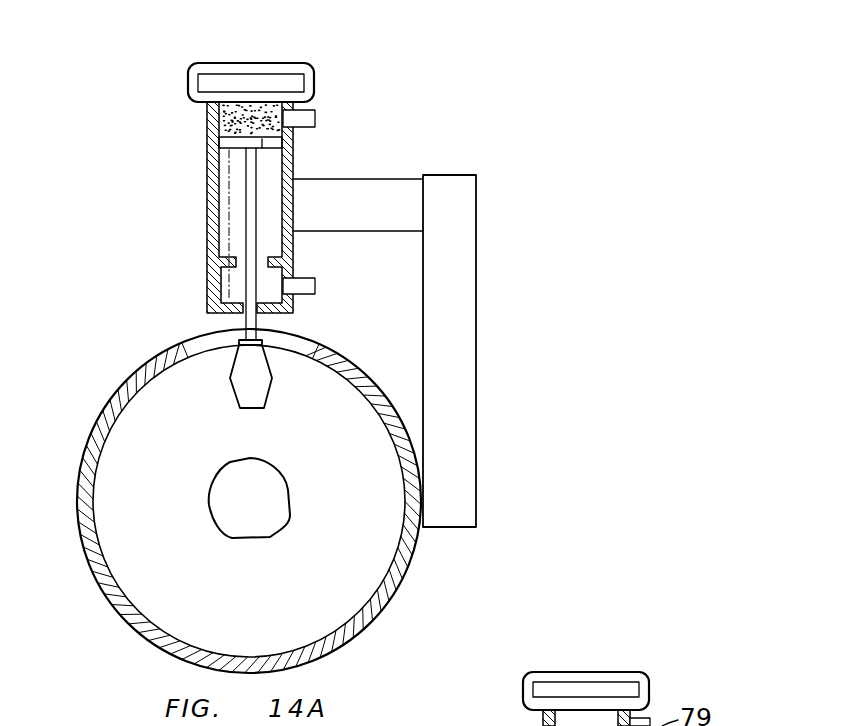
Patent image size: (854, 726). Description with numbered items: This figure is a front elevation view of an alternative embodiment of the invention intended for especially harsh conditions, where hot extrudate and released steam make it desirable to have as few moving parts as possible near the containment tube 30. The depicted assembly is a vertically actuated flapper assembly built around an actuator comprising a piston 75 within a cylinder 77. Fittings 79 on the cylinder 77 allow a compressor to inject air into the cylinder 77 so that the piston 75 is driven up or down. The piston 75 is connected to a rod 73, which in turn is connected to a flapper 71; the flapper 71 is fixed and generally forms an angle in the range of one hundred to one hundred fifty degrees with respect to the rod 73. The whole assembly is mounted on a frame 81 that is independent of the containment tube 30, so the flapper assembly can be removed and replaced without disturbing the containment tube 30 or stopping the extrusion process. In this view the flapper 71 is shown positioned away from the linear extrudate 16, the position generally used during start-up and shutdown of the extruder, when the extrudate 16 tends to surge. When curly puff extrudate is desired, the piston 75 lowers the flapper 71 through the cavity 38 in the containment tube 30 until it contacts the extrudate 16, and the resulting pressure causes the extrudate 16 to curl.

The extrudate 16 is at (287, 522).
The containment tube 30 is at (92, 572).
The cavity 38 is at (195, 330).
The flapper 71 is at (232, 390).
The rod 73 is at (244, 193).
The piston 75 is at (272, 149).
The cylinder 77 is at (207, 135).
The fittings 79 is at (316, 120).
The frame 81 is at (477, 268).